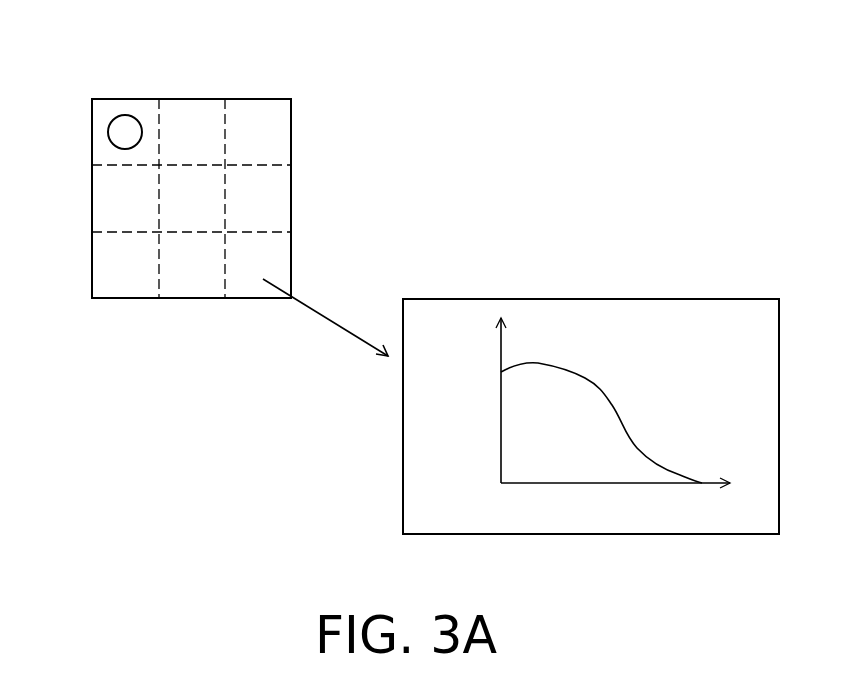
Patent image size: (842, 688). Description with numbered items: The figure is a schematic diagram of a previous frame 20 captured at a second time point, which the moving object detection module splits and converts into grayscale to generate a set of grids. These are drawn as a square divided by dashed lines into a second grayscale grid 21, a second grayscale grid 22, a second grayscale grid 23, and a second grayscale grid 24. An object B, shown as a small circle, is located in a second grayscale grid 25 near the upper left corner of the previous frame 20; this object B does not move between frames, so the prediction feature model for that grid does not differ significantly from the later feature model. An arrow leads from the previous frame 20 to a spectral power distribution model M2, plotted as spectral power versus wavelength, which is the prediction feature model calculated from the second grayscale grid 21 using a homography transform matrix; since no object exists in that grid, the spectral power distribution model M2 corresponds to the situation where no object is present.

The previous frame 20 is at (292, 127).
The second grayscale grid 21 is at (285, 265).
The second grayscale grid 22 is at (285, 207).
The second grayscale grid 23 is at (192, 180).
The second grayscale grid 24 is at (187, 273).
The second grayscale grid 25 is at (108, 148).
The object B is at (127, 115).
The spectral power distribution model M2 is at (585, 298).